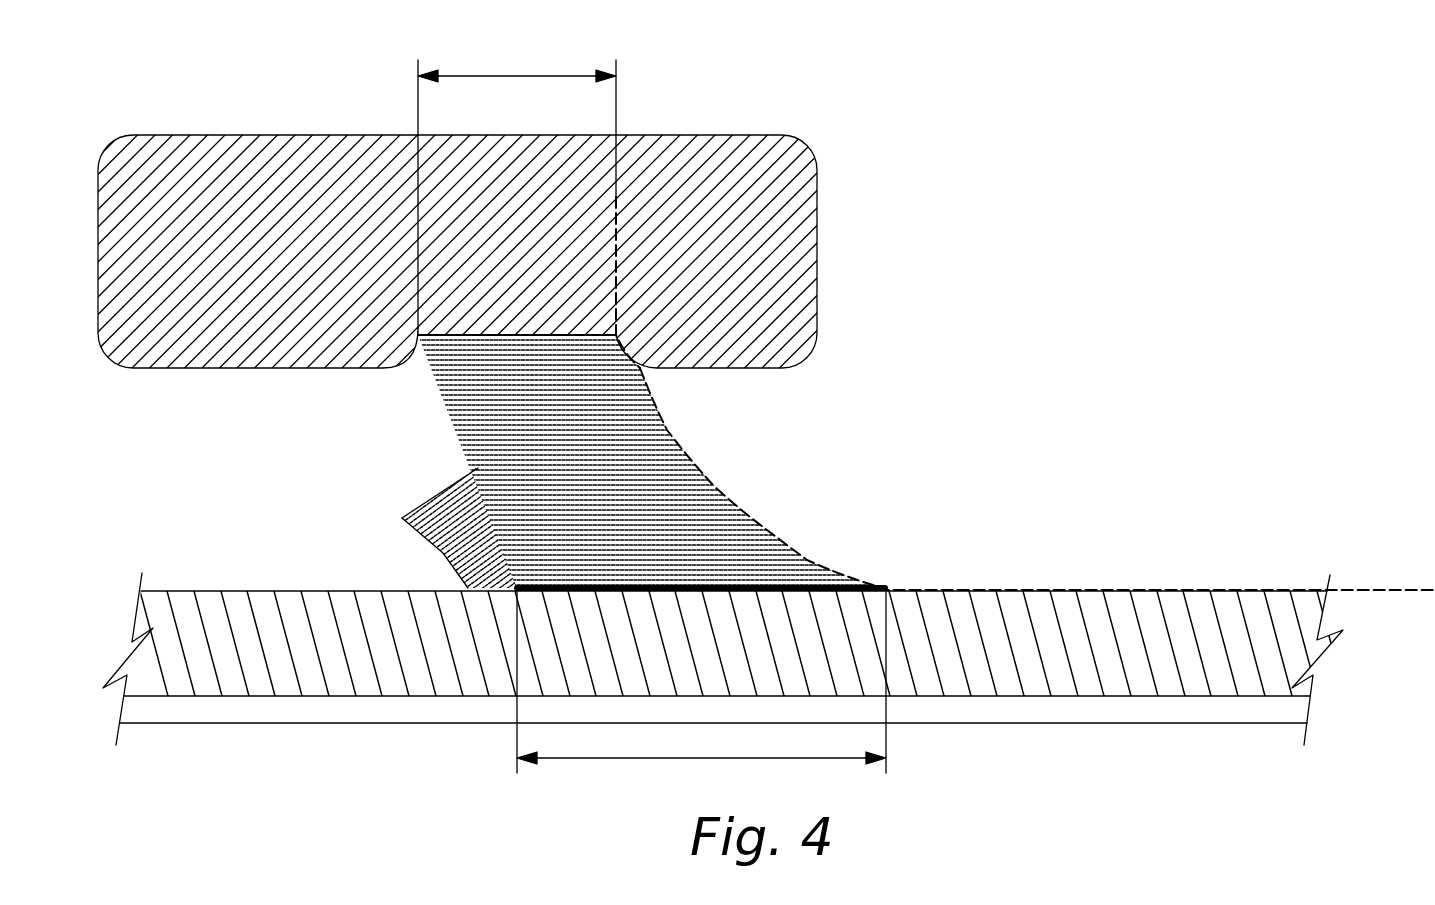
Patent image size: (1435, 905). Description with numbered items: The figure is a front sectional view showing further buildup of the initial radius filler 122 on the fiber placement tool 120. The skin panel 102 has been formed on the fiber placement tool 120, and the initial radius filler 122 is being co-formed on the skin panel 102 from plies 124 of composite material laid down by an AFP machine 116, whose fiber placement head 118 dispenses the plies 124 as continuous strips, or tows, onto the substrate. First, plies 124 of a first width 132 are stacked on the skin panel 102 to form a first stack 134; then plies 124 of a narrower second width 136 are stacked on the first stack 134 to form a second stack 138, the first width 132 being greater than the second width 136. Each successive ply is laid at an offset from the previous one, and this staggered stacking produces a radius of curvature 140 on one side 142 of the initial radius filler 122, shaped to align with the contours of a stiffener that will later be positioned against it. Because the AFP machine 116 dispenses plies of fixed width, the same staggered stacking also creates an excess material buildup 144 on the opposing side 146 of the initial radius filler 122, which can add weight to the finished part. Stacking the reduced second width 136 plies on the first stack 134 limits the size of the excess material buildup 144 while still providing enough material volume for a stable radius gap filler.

The skin panel 102 is at (1302, 648).
The AFP machine 116 is at (125, 75).
The fiber placement head 118 is at (330, 135).
The fiber placement tool 120 is at (1202, 712).
The initial radius filler 122 is at (345, 515).
The plies 124 is at (550, 440).
The first width 132 is at (605, 760).
The first stack 134 is at (705, 538).
The second width 136 is at (490, 75).
The second stack 138 is at (630, 398).
The radius of curvature 140 is at (620, 208).
The one side 142 is at (713, 486).
The excess material buildup 144 is at (452, 505).
The opposing side 146 is at (440, 553).